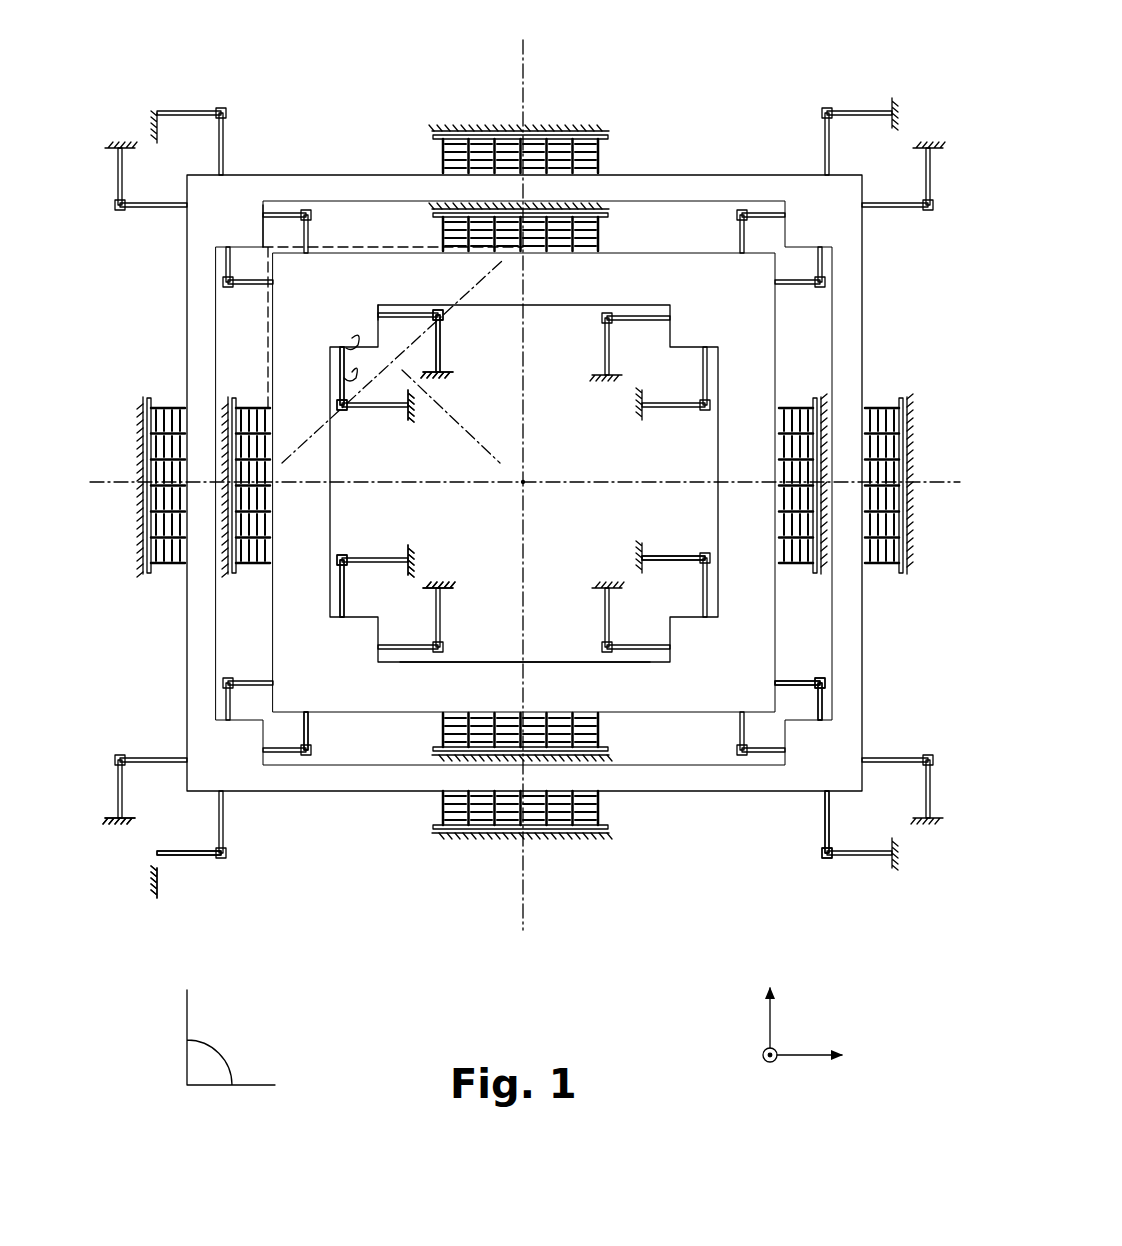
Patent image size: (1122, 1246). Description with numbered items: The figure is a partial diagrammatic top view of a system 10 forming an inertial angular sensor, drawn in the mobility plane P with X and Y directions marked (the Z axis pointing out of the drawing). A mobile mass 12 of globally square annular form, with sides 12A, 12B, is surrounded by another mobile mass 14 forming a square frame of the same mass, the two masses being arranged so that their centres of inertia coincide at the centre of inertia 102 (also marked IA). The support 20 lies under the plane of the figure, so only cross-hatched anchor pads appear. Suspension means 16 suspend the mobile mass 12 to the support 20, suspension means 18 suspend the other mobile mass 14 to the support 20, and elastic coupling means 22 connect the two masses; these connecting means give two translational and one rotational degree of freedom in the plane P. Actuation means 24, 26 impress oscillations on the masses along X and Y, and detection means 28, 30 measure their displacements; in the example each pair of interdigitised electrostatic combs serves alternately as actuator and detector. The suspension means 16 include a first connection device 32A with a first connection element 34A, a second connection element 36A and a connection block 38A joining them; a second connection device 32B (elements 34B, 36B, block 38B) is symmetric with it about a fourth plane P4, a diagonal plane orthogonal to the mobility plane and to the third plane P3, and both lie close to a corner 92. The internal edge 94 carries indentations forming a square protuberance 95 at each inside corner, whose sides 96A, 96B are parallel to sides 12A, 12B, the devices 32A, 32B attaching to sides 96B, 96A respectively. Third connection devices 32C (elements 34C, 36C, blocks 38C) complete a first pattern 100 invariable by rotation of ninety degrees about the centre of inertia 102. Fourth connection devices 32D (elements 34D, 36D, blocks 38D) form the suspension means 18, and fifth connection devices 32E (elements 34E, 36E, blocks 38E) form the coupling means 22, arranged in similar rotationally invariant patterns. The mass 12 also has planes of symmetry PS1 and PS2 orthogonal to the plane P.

The system 10 is at (802, 93).
The mobile mass 12 is at (712, 249).
The side of mobile mass 12A is at (633, 252).
The side of mobile mass 12B is at (788, 323).
The other mobile mass 14 is at (645, 172).
The suspension means 16 is at (591, 633).
The suspension means 18 is at (185, 862).
The support 20 is at (450, 590).
The elastic coupling means 22 is at (322, 732).
The actuation means 24 is at (443, 222).
The actuation means 26 is at (442, 152).
The detection means 28 is at (258, 566).
The detection means 30 is at (168, 405).
The first connection device 32A is at (508, 322).
The second connection device 32B is at (462, 455).
The third connection devices 32C is at (698, 383).
The fourth connection devices 32D is at (201, 126).
The fifth connection devices 32E is at (247, 270).
The first connection element 34A is at (441, 348).
The first connection element 34B is at (372, 408).
The first connection element 34C is at (362, 559).
The first connection element 34D is at (885, 921).
The first connection element 34E is at (793, 678).
The second connection element 36A is at (444, 378).
The second connection element 36B is at (410, 411).
The second connection element 36C is at (410, 560).
The second connection element 36D is at (884, 863).
The second connection element 36E is at (822, 703).
The connection block 38A is at (443, 320).
The connection block 38B is at (341, 411).
The connection block 38C is at (344, 560).
The connection block 38D is at (826, 859).
The connection block 38E is at (818, 687).
The corner of mobile mass 92 is at (288, 270).
The internal edge 94 is at (492, 661).
The square protuberance 95 is at (360, 307).
The side of protuberance 96A is at (352, 372).
The side of protuberance 96B is at (352, 338).
The first pattern 100 is at (666, 551).
The centre of inertia 102 is at (528, 487).
The intersection axis IA is at (540, 460).
The mobility plane P is at (236, 1055).
The third plane P3 is at (495, 270).
The fourth plane P4 is at (505, 470).
The first plane of symmetry PS1 is at (103, 479).
The second plane of symmetry PS2 is at (540, 50).
The X direction X is at (823, 1056).
The Y direction Y is at (784, 1013).
The Z axis Z is at (759, 1070).